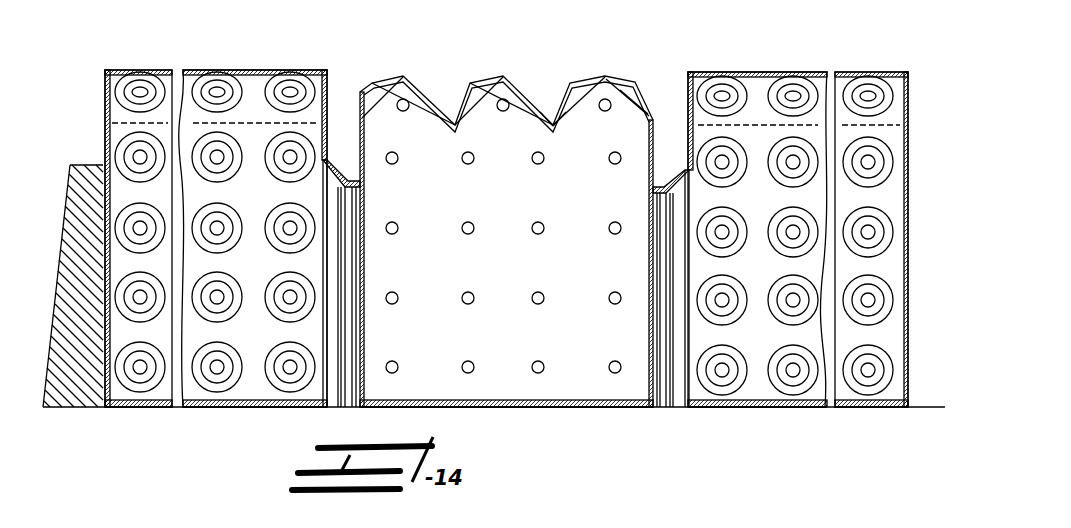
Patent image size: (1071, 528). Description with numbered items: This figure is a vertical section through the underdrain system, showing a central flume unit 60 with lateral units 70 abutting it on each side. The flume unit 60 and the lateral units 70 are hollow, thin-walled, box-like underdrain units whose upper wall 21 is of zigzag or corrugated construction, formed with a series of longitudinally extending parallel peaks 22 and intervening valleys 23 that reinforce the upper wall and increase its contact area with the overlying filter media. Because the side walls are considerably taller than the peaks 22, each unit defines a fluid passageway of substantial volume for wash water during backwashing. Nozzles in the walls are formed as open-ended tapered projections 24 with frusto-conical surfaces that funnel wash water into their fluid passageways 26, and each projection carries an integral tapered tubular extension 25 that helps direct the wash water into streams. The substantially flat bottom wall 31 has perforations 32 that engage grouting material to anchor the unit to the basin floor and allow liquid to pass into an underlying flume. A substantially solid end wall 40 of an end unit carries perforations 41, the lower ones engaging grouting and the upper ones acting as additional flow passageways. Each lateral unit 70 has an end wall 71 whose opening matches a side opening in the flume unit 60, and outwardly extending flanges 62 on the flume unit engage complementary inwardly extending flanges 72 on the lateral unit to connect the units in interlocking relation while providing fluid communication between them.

The upper wall 21 is at (654, 112).
The peaks 22 is at (161, 70).
The valleys 23 is at (556, 124).
The open-ended tapered projections 24 is at (403, 75).
The extension 25 is at (290, 92).
The fluid passageways 26 is at (217, 92).
The bottom wall 31 is at (228, 408).
The perforations 32 is at (290, 408).
The end wall 40 is at (512, 200).
The perforations 41 is at (537, 295).
The flume unit 60 is at (640, 68).
The outwardly extending flanges 62 is at (349, 200).
The lateral units 70 is at (330, 58).
The end wall 71 is at (357, 196).
The inwardly extending flanges 72 is at (342, 184).